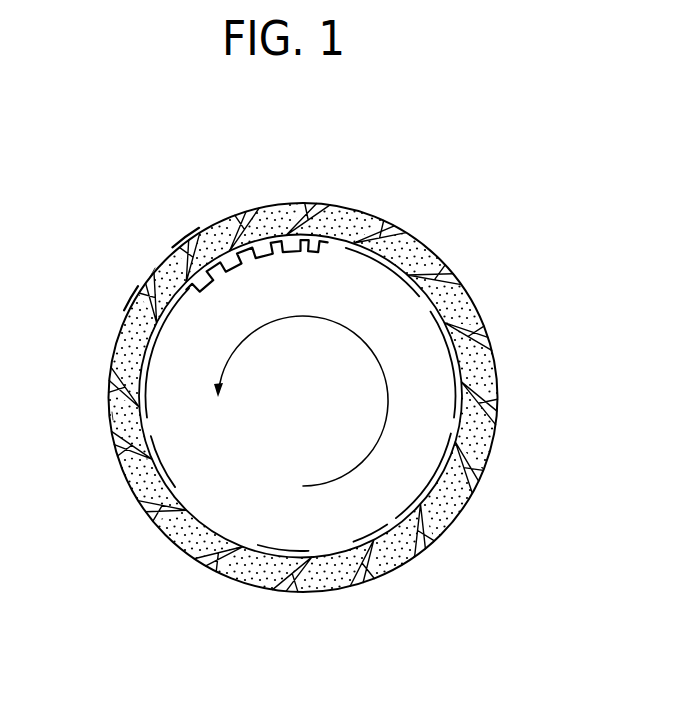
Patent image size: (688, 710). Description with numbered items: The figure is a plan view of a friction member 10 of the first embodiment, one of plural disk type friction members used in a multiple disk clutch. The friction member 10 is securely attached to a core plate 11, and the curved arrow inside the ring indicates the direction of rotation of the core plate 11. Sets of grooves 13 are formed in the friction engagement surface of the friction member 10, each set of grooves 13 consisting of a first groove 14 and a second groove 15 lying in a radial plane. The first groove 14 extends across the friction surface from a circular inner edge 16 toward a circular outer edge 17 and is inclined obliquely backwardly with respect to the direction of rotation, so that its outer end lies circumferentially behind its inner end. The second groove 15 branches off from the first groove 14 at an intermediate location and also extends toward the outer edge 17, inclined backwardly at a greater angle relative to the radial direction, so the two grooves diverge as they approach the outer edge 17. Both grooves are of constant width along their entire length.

The friction member 10 is at (495, 229).
The core plate 11 is at (313, 244).
The set of grooves 13 is at (147, 256).
The first groove 14 is at (126, 321).
The second groove 15 is at (150, 277).
The circular inner edge 16 is at (144, 428).
The circular outer edge 17 is at (113, 420).